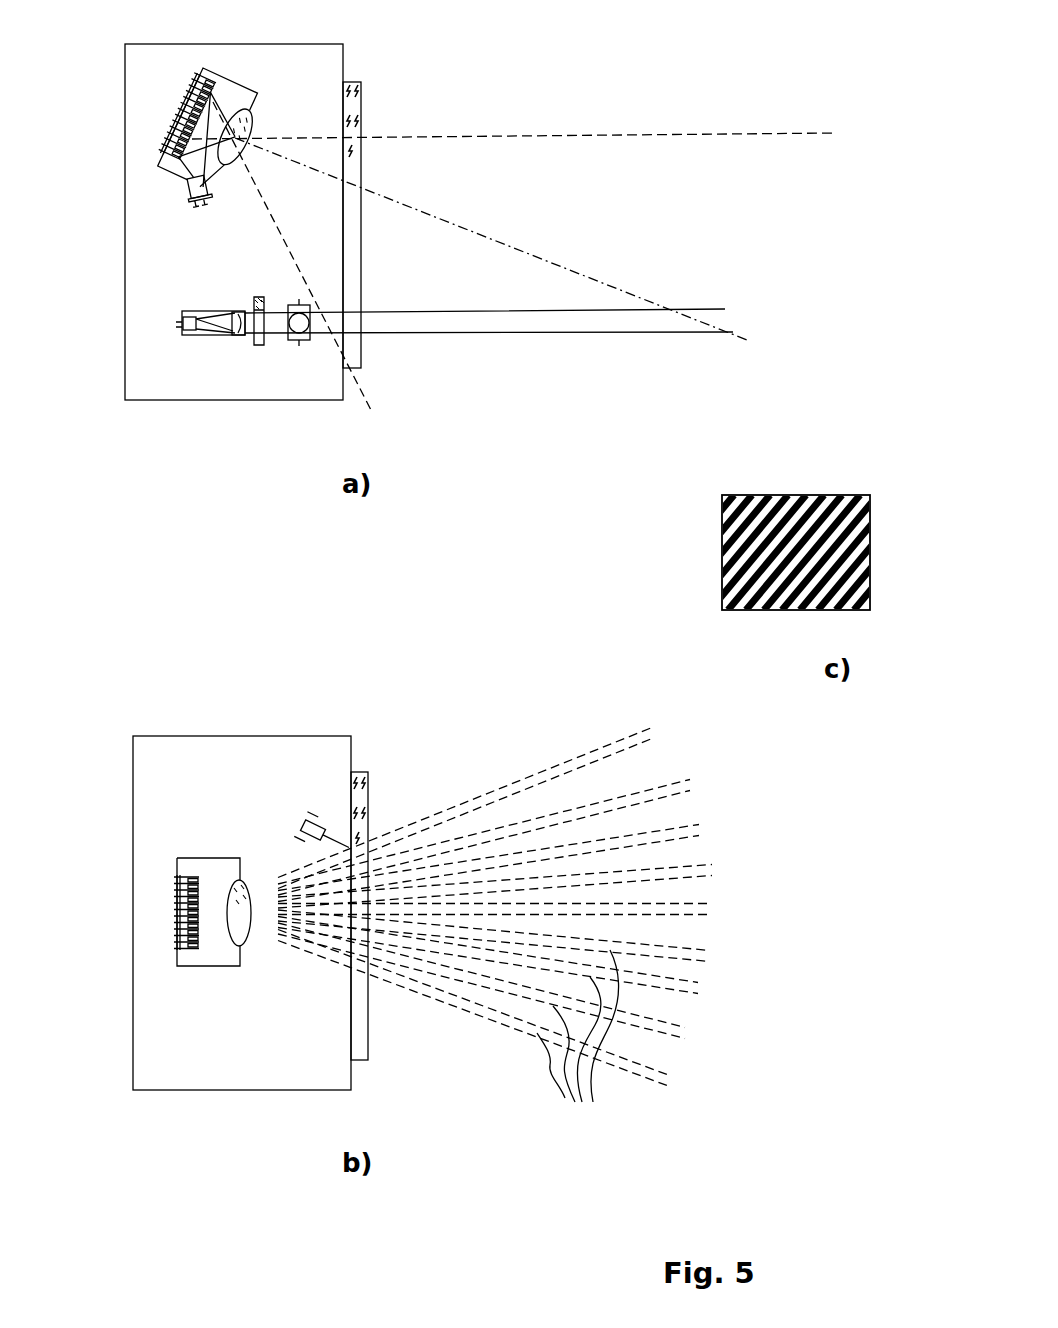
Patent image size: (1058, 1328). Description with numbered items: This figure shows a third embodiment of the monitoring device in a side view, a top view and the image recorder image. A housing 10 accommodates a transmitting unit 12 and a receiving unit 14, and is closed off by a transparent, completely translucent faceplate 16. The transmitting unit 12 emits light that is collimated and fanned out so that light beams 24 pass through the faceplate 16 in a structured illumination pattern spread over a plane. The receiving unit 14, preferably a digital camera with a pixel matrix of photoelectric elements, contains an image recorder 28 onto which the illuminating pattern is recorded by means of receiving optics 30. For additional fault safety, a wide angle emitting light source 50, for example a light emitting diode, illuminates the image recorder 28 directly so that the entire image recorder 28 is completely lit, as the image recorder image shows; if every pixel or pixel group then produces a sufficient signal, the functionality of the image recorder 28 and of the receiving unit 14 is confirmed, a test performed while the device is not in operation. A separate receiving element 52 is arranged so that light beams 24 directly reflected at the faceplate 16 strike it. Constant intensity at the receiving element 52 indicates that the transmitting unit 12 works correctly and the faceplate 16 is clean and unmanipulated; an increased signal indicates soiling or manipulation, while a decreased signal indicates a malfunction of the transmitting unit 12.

The housing 10 is at (126, 317).
The transmitting unit 12 is at (194, 345).
The receiving unit 14 is at (237, 74).
The faceplate 16 is at (360, 92).
The light beams 24 is at (517, 318).
The image recorder 28 is at (199, 94).
The receiving optics 30 is at (252, 113).
The wide angle light source 50 is at (190, 184).
The receiving element 52 is at (299, 343).